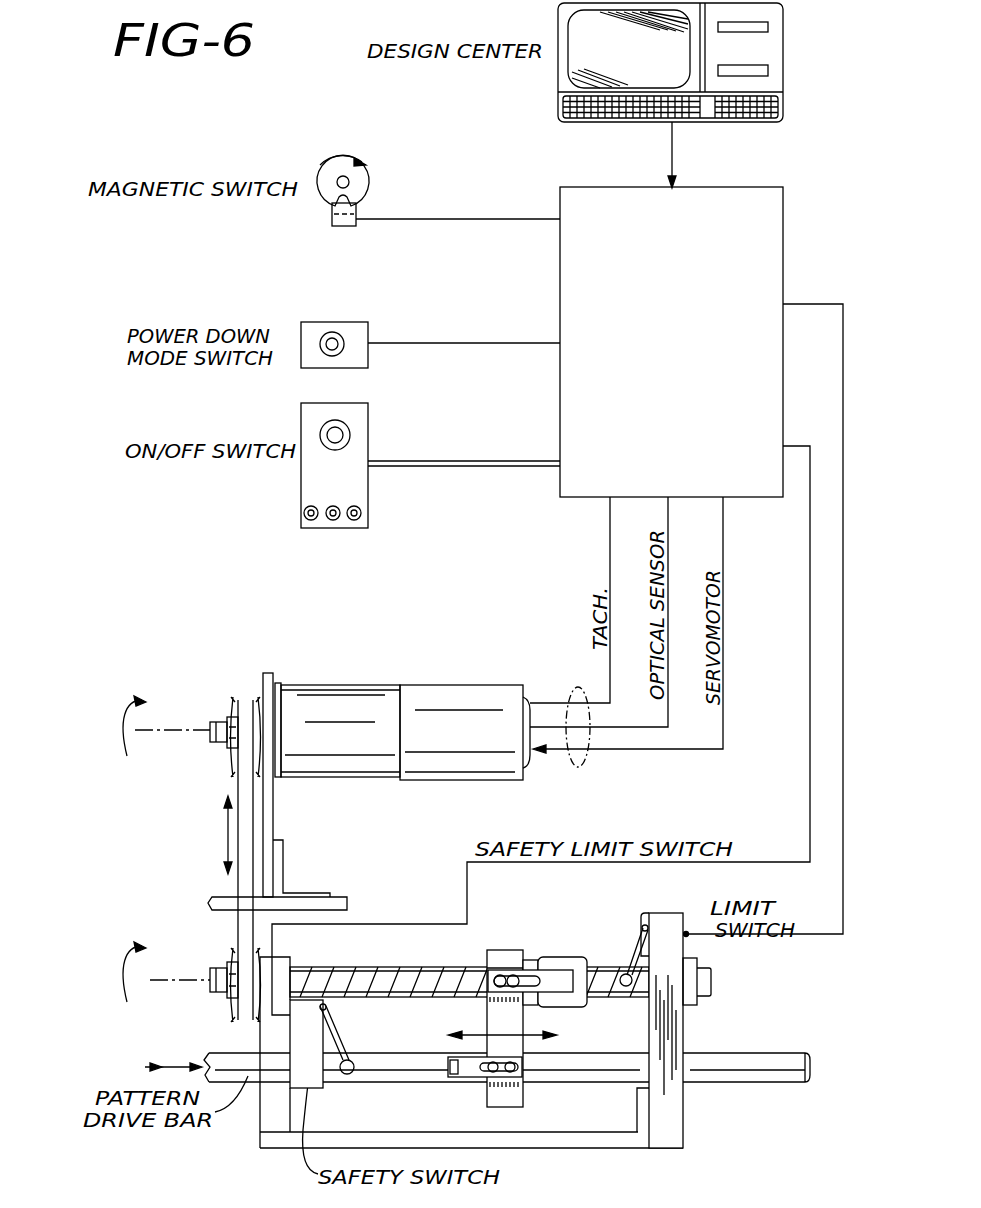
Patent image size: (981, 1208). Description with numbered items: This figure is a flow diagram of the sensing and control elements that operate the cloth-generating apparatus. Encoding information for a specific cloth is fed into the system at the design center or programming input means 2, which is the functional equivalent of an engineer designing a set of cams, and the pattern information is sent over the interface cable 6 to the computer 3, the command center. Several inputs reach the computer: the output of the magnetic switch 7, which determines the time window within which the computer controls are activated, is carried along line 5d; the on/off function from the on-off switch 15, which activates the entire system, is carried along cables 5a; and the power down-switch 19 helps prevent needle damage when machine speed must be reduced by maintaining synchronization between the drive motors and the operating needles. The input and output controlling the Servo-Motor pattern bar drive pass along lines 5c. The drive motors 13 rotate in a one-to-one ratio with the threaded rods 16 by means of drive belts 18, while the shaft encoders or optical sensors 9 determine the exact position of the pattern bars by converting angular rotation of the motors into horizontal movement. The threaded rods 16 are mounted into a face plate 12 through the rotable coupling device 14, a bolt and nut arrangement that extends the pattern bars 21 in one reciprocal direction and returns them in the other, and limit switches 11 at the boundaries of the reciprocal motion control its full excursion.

The programming input means 2 is at (550, 110).
The computer 3 is at (768, 243).
The cables 5a is at (470, 343).
The lines 5c is at (575, 762).
The line 5d is at (485, 219).
The interface cable 6 is at (674, 154).
The magnetic switch 7 is at (365, 178).
The shaft encoders (optical sensors) 9 is at (500, 698).
The limit switches 11 is at (312, 1068).
The face plate 12 is at (522, 1095).
The drive motors 13 is at (370, 702).
The rotable coupling device 14 is at (585, 955).
The on-off switch 15 is at (363, 421).
The threaded rods 16 is at (395, 978).
The drive belts 18 is at (240, 788).
The power down-switch 19 is at (337, 322).
The pattern bars 21 is at (225, 1063).